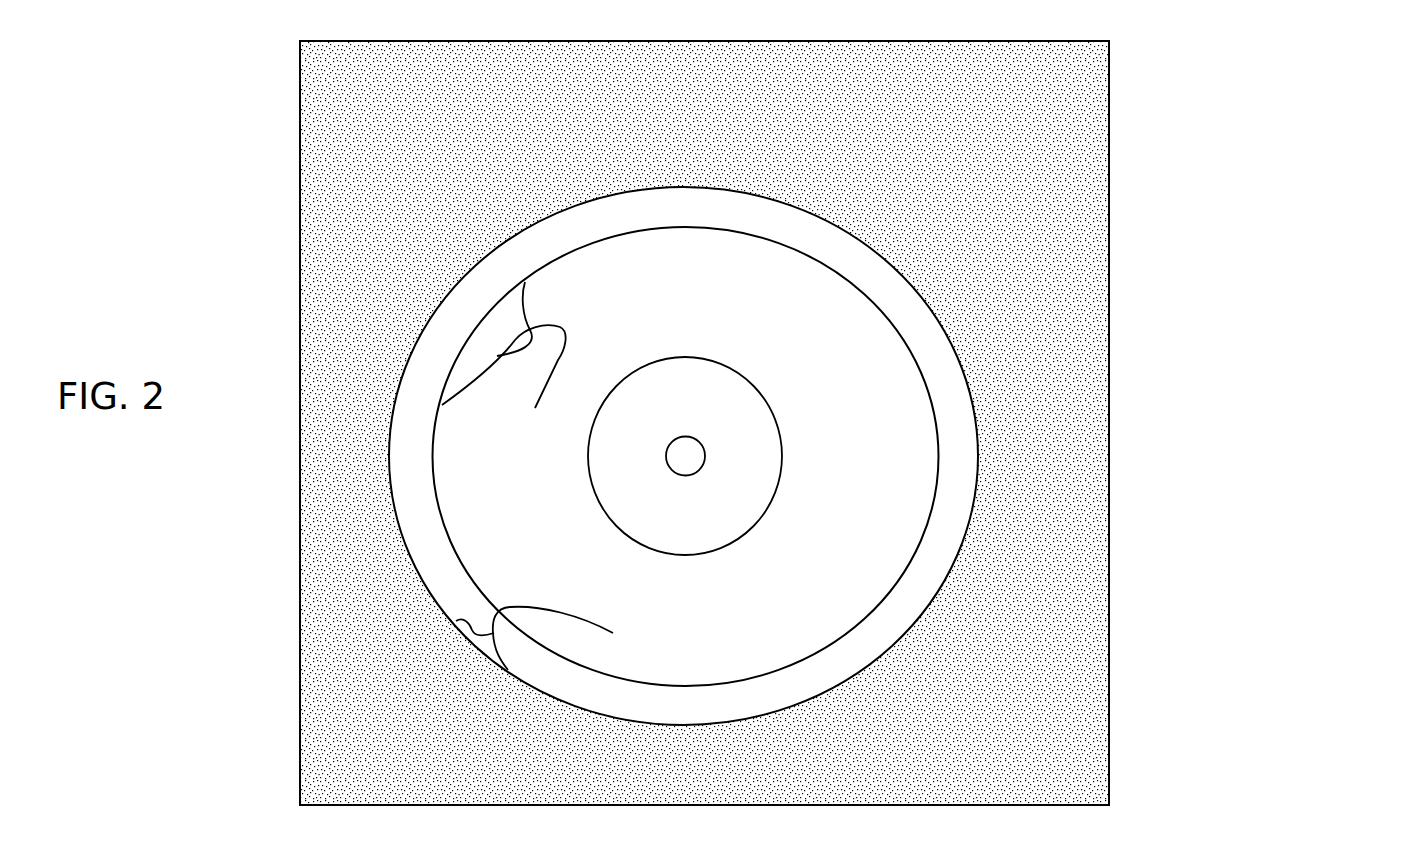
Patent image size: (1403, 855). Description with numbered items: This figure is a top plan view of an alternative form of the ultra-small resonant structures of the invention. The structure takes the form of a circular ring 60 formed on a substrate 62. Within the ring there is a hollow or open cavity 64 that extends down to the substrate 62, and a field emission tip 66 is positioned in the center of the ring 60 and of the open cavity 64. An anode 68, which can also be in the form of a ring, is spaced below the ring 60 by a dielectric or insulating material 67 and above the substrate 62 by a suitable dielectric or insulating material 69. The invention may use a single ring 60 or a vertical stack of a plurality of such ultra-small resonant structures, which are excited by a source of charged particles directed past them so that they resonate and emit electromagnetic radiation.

The circular ring 60 is at (480, 514).
The substrate 62 is at (330, 108).
The open cavity 64 is at (777, 490).
The field emission tip 66 is at (678, 436).
The dielectric or insulating material 67 is at (504, 365).
The anode 68 is at (937, 315).
The dielectric or insulating material 69 is at (565, 638).